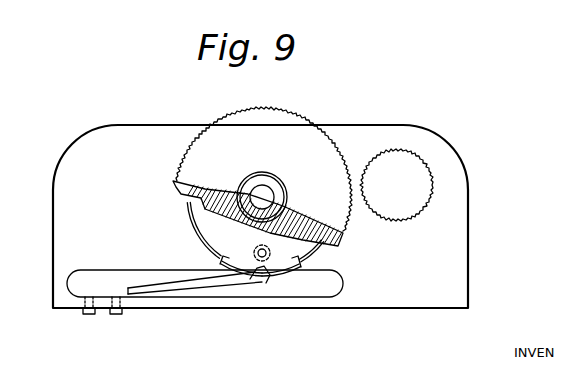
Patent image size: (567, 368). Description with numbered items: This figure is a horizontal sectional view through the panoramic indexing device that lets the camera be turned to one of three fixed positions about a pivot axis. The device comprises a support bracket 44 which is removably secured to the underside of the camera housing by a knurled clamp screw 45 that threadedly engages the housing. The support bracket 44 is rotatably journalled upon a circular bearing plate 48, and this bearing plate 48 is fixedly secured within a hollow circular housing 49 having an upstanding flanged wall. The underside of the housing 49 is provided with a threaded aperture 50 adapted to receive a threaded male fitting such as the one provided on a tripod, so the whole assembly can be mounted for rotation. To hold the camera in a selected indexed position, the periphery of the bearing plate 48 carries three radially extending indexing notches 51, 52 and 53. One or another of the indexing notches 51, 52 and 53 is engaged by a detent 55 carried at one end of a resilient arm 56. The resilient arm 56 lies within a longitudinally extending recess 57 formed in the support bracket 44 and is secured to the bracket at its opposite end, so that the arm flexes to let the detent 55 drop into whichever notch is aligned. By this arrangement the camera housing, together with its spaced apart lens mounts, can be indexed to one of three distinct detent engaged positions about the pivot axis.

The support bracket 44 is at (468, 250).
The knurled clamp screw 45 is at (420, 182).
The circular bearing plate 48 is at (203, 223).
The hollow circular housing 49 is at (210, 143).
The threaded aperture 50 is at (263, 196).
The indexing notch 51 is at (306, 266).
The indexing notch 52 is at (273, 263).
The indexing notch 53 is at (217, 263).
The detent 55 is at (263, 283).
The resilient arm 56 is at (233, 287).
The longitudinally extending recess 57 is at (138, 283).